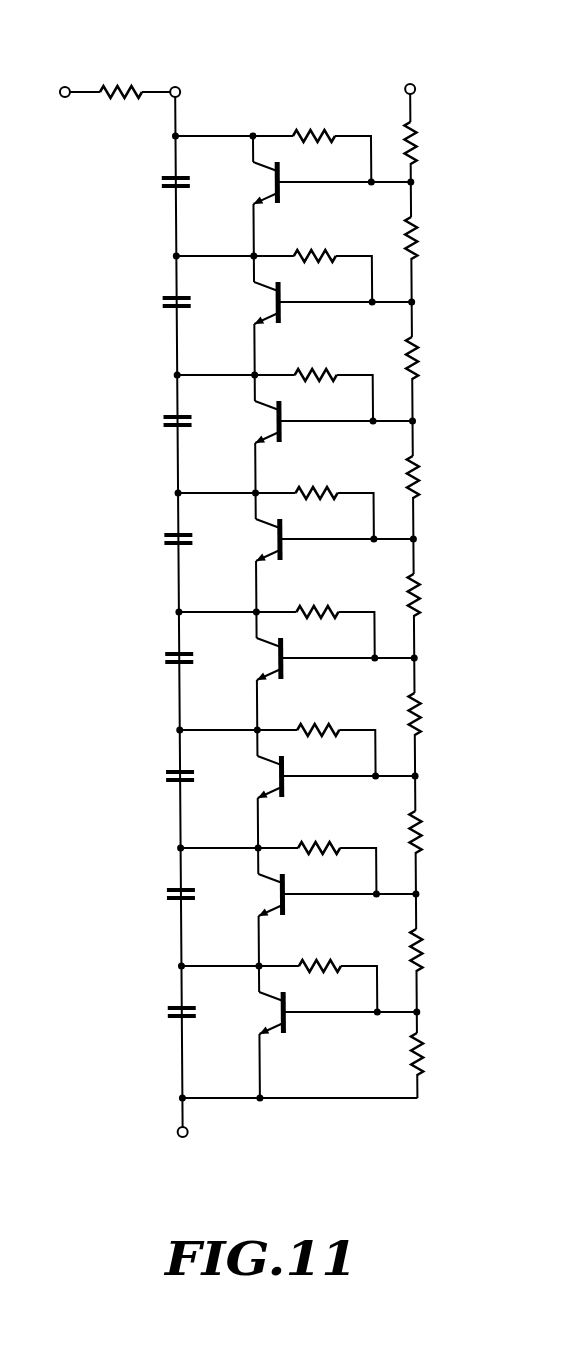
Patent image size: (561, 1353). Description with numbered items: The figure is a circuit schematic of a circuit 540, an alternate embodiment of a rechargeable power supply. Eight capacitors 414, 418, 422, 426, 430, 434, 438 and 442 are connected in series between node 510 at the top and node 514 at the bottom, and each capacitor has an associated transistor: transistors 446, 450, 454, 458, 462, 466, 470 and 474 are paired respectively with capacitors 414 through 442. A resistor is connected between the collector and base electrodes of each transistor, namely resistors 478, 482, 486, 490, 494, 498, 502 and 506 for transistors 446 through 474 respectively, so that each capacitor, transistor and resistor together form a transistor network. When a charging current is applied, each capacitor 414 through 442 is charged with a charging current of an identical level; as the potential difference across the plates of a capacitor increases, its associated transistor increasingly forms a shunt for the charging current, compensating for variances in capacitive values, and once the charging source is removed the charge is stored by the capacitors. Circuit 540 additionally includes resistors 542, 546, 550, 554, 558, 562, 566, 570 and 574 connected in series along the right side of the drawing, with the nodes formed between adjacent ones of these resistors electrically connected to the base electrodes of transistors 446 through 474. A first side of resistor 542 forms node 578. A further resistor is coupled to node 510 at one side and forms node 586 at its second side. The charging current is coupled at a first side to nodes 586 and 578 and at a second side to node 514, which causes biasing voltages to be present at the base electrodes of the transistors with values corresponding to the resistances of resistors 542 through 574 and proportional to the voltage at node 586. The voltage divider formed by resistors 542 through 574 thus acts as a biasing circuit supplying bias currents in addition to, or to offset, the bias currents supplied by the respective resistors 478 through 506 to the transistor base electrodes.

The circuit 540 is at (125, 150).
The node 586 is at (65, 86).
The resistor 478 is at (112, 81).
The node 510 is at (181, 87).
The node 578 is at (414, 84).
The node 514 is at (175, 1138).
The capacitor 414 is at (164, 193).
The capacitor 418 is at (164, 313).
The capacitor 422 is at (164, 432).
The capacitor 426 is at (164, 550).
The capacitor 430 is at (164, 669).
The capacitor 434 is at (164, 787).
The capacitor 438 is at (164, 905).
The capacitor 442 is at (164, 1023).
The transistor 446 is at (259, 178).
The transistor 450 is at (259, 298).
The transistor 454 is at (259, 417).
The transistor 458 is at (259, 535).
The transistor 462 is at (259, 654).
The transistor 466 is at (259, 772).
The transistor 470 is at (259, 890).
The transistor 474 is at (259, 1008).
The resistor 482 is at (325, 248).
The resistor 486 is at (325, 367).
The resistor 490 is at (325, 485).
The resistor 494 is at (325, 604).
The resistor 498 is at (325, 722).
The resistor 502 is at (325, 840).
The resistor 506 is at (325, 958).
The resistor 542 is at (416, 137).
The resistor 546 is at (417, 241).
The resistor 550 is at (417, 361).
The resistor 554 is at (417, 480).
The resistor 558 is at (417, 598).
The resistor 562 is at (417, 717).
The resistor 566 is at (417, 835).
The resistor 570 is at (417, 953).
The resistor 574 is at (417, 1057).